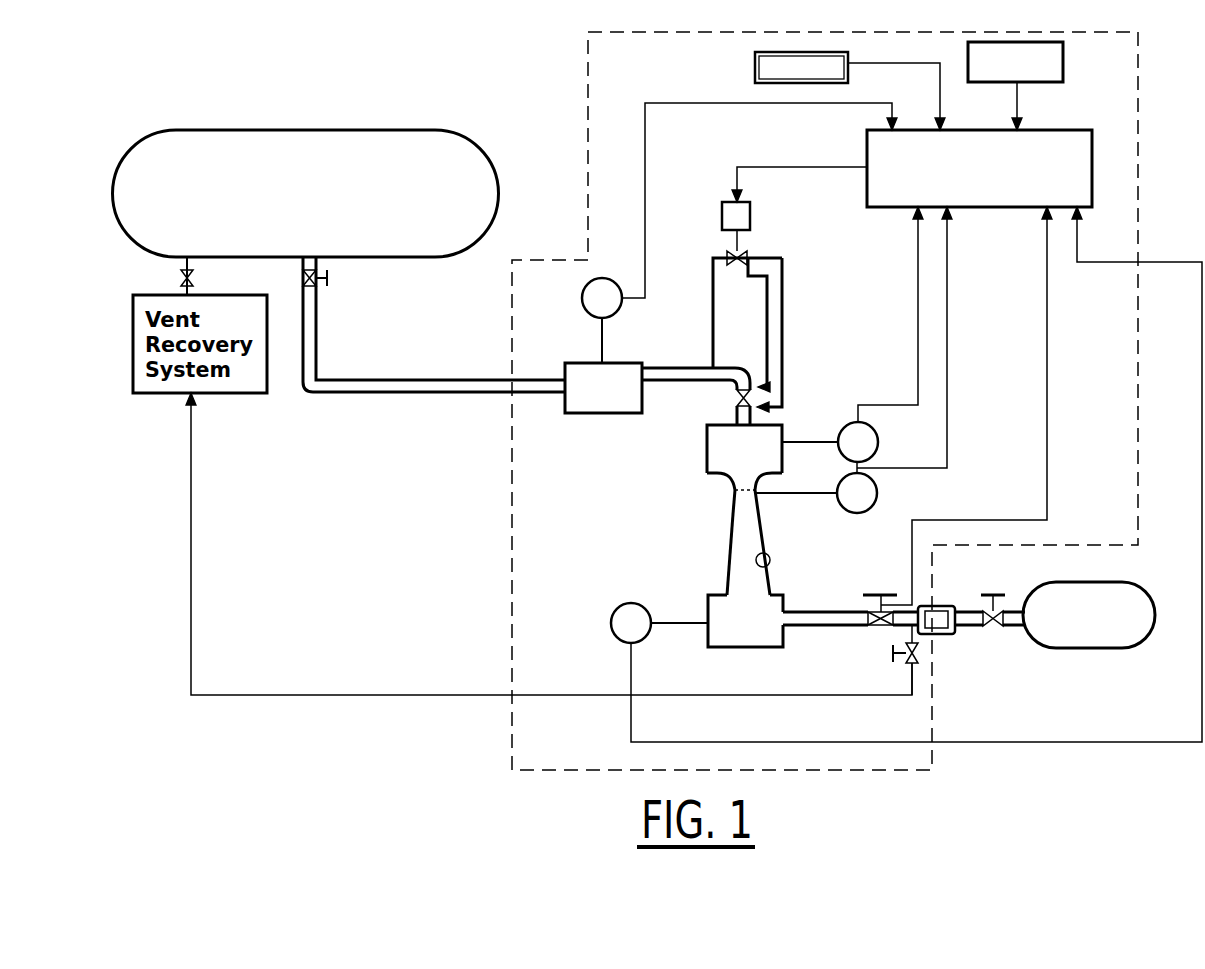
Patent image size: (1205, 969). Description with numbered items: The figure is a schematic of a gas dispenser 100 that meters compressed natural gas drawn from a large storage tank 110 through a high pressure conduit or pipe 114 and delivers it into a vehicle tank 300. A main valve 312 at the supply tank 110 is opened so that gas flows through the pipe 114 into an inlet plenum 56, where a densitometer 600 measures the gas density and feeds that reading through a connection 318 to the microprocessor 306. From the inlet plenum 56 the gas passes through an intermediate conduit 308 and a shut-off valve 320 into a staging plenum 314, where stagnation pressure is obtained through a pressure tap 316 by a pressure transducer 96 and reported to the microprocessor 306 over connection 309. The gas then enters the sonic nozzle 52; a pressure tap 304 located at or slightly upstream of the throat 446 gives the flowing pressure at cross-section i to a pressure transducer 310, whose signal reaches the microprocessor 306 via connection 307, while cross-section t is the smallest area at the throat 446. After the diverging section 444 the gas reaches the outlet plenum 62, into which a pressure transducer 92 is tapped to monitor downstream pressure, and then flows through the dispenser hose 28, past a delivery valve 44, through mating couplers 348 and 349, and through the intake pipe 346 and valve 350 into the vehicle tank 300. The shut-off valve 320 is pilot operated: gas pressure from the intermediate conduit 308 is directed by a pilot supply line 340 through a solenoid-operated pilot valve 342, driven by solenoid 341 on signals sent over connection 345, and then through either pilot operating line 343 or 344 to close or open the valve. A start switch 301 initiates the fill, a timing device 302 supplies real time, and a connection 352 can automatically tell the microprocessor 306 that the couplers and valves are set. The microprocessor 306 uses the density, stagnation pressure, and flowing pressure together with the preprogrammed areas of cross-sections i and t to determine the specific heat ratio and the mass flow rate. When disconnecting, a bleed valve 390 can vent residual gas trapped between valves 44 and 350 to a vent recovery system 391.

The storage tank 110 is at (330, 128).
The main valve 312 is at (322, 283).
The high pressure conduit 114 is at (433, 380).
The vent recovery system 391 is at (220, 393).
The gas dispenser 100 is at (578, 93).
The start switch 301 is at (748, 66).
The timing device 302 is at (1063, 62).
The microprocessor 306 is at (1047, 130).
The connection 318 is at (645, 135).
The connection 345 is at (837, 167).
The solenoid 341 is at (750, 220).
The pilot valve 342 is at (742, 256).
The pilot operating line 343 is at (782, 282).
The pilot operating line 344 is at (767, 312).
The pilot supply line 340 is at (713, 313).
The densitometer 600 is at (582, 298).
The inlet plenum 56 is at (578, 363).
The intermediate conduit 308 is at (690, 368).
The shut-off valve 320 is at (733, 396).
The pressure tap 316 is at (788, 437).
The staging plenum 314 is at (707, 450).
The cross-section i is at (733, 487).
The throat 446 is at (733, 493).
The cross-section t is at (732, 517).
The sonic nozzle 52 is at (727, 547).
The pressure tap 304 is at (757, 495).
The diverging section 444 is at (770, 556).
The outlet plenum 62 is at (708, 595).
The pressure transducer 92 is at (632, 603).
The pressure transducer 96 is at (878, 442).
The pressure transducer 310 is at (877, 493).
The connection 309 is at (920, 338).
The connection 307 is at (947, 372).
The connection 352 is at (1047, 465).
The delivery valve 44 is at (873, 613).
The dispenser hose 28 is at (853, 628).
The bleed valve 390 is at (893, 662).
The intake pipe 346 is at (968, 607).
The coupler 348 is at (937, 634).
The coupler 349 is at (955, 634).
The valve 350 is at (1005, 600).
The vehicle tank 300 is at (1115, 582).